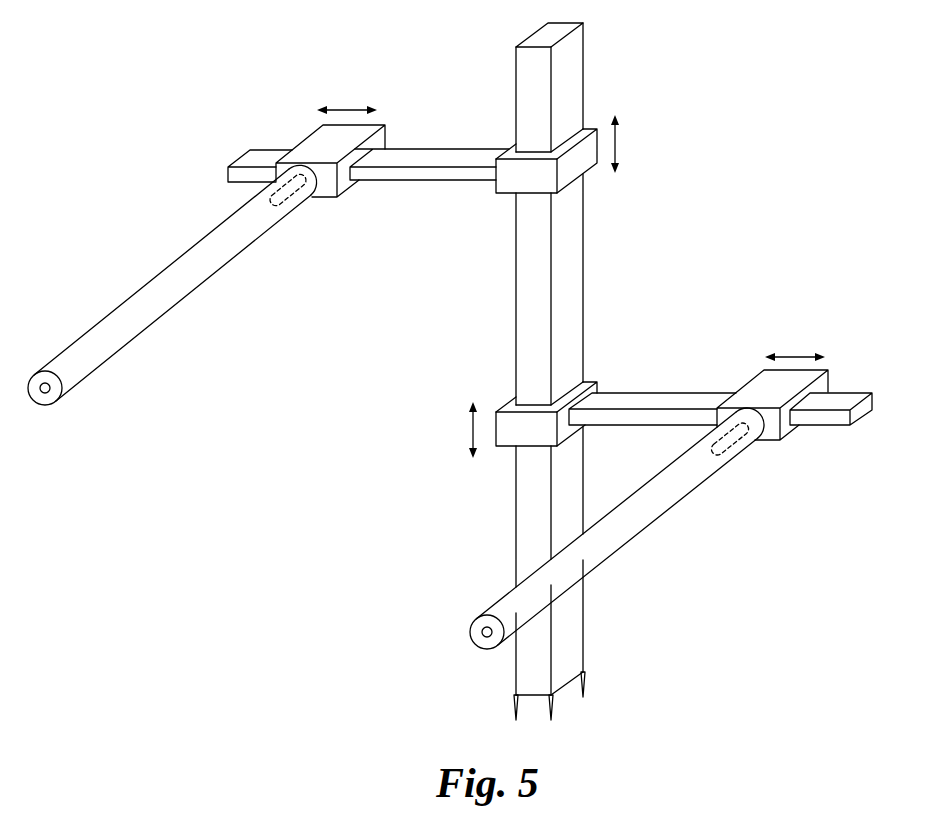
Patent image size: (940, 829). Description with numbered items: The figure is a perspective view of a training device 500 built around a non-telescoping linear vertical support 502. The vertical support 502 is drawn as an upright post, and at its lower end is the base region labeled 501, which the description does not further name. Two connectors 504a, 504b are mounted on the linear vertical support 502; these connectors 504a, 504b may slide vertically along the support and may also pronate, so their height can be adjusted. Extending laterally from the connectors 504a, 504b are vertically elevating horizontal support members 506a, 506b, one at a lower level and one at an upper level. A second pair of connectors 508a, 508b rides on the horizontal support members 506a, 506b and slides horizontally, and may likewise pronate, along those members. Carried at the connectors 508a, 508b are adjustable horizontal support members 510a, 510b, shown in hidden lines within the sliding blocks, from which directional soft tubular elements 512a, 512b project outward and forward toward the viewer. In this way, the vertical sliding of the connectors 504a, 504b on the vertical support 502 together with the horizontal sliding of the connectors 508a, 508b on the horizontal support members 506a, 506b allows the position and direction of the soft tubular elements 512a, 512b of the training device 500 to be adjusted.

The training device 500 is at (283, 643).
The ground stakes 501 is at (600, 693).
The non-telescoping linear vertical support 502 is at (516, 480).
The connector 504a is at (563, 428).
The connector 504b is at (583, 162).
The vertically elevating horizontal support member 506a is at (657, 398).
The vertically elevating horizontal support member 506b is at (418, 157).
The connector 508a is at (828, 380).
The connector 508b is at (345, 183).
The adjustable horizontal support member 510a is at (745, 452).
The adjustable horizontal support member 510b is at (302, 206).
The directional soft tubular element 512a is at (600, 562).
The directional soft tubular element 512b is at (160, 320).